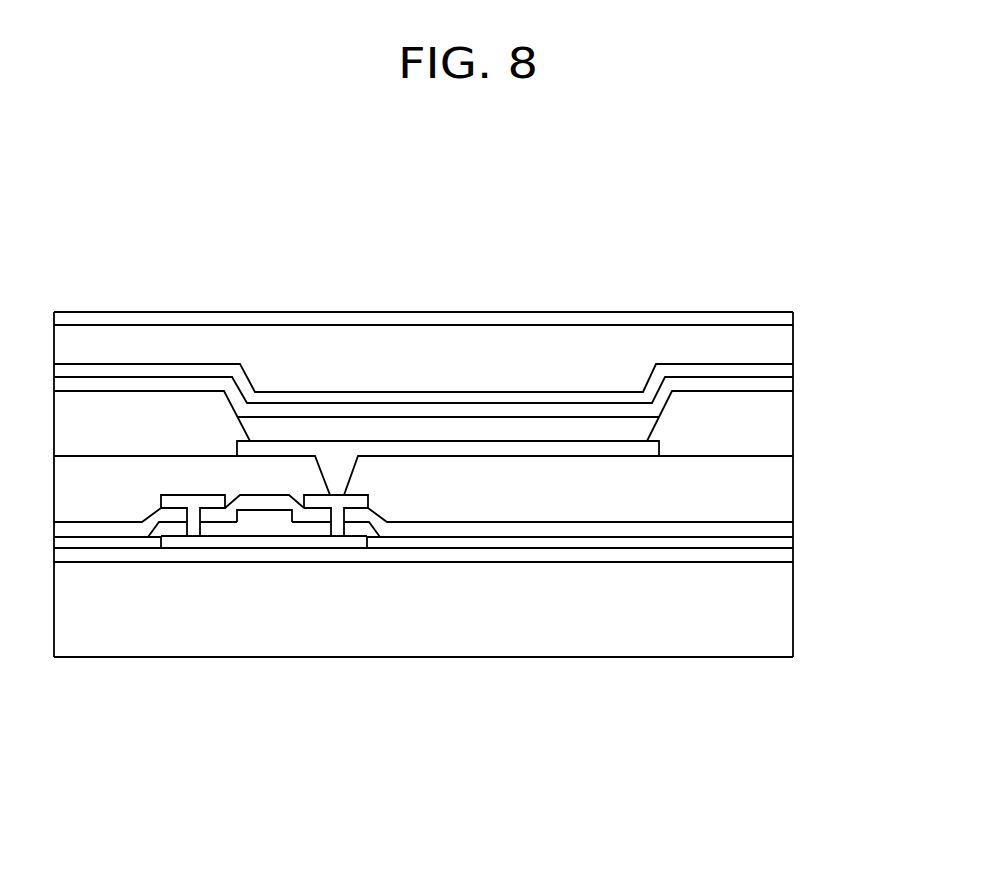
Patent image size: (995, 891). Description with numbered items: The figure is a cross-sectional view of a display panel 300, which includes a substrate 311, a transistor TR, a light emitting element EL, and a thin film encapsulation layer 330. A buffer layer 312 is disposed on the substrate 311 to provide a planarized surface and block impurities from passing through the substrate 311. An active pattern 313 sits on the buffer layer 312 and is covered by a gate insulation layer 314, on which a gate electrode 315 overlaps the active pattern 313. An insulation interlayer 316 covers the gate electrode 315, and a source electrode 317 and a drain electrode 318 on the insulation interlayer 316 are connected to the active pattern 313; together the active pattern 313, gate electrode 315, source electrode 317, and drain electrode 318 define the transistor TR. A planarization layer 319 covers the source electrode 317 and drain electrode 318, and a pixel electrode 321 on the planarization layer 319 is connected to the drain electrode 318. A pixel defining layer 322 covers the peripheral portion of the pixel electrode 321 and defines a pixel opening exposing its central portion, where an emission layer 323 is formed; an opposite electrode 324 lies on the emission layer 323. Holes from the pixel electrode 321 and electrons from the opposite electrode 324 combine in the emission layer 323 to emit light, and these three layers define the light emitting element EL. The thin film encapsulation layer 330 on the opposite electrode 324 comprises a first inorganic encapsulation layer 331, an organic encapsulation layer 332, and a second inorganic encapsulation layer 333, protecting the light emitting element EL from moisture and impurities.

The display panel 300 is at (767, 246).
The substrate 311 is at (793, 617).
The buffer layer 312 is at (793, 563).
The active pattern 313 is at (233, 543).
The gate insulation layer 314 is at (793, 543).
The gate electrode 315 is at (273, 518).
The insulation interlayer 316 is at (793, 528).
The source electrode 317 is at (178, 503).
The drain electrode 318 is at (358, 503).
The planarization layer 319 is at (793, 480).
The pixel electrode 321 is at (288, 450).
The pixel defining layer 322 is at (793, 417).
The emission layer 323 is at (342, 424).
The opposite electrode 324 is at (393, 409).
The thin film encapsulation layer 330 is at (598, 236).
The first inorganic encapsulation layer 331 is at (477, 394).
The organic encapsulation layer 332 is at (528, 349).
The second inorganic encapsulation layer 333 is at (581, 319).
The light emitting element EL is at (412, 236).
The transistor TR is at (153, 727).